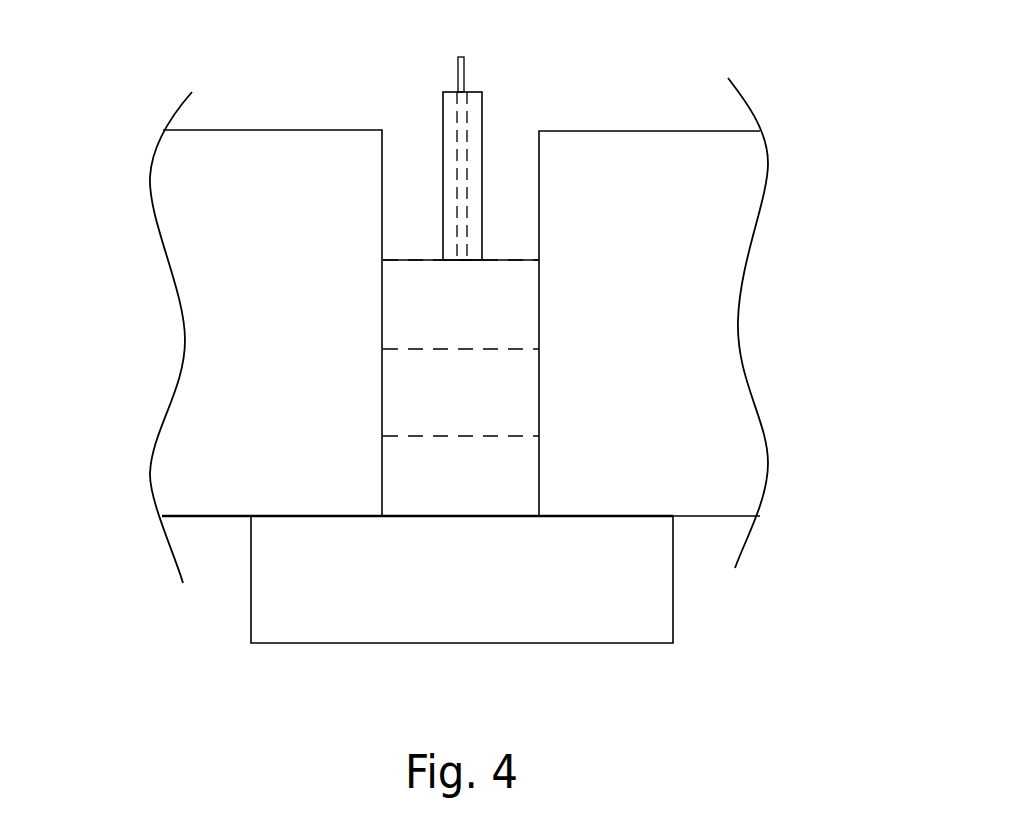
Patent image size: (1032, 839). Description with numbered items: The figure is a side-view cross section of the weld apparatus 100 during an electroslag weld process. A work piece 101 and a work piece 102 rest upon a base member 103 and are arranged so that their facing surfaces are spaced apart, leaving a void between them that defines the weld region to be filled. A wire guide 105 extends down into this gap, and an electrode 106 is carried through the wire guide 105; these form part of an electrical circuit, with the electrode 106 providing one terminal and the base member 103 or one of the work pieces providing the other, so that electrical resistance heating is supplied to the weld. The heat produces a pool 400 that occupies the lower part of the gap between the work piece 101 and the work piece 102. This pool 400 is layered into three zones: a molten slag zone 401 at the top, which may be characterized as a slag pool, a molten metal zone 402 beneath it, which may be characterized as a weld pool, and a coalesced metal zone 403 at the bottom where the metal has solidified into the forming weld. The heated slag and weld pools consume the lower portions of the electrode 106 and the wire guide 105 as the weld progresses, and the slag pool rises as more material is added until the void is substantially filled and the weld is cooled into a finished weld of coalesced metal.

The weld apparatus 100 is at (451, 328).
The work piece 101 is at (213, 497).
The work piece 102 is at (732, 503).
The base member 103 is at (652, 618).
The wire guide 105 is at (443, 110).
The electrode 106 is at (458, 73).
The pool 400 is at (613, 295).
The molten slag zone 401 is at (498, 297).
The molten metal zone 402 is at (513, 392).
The coalesced metal zone 403 is at (513, 468).